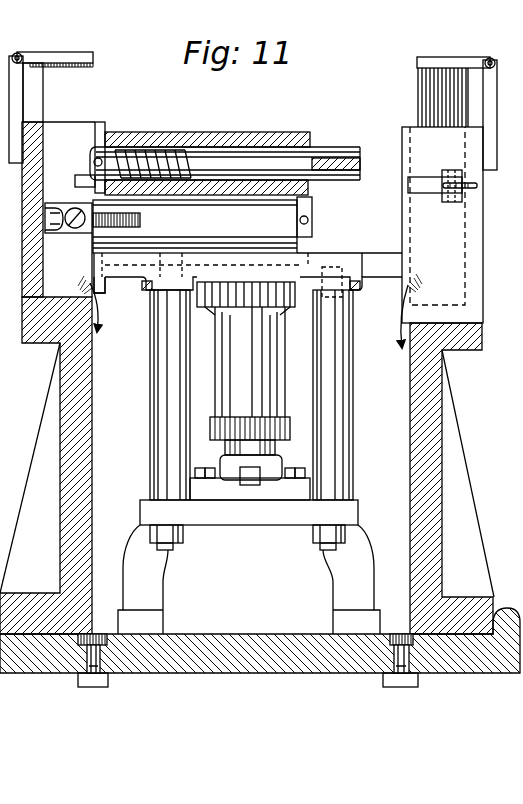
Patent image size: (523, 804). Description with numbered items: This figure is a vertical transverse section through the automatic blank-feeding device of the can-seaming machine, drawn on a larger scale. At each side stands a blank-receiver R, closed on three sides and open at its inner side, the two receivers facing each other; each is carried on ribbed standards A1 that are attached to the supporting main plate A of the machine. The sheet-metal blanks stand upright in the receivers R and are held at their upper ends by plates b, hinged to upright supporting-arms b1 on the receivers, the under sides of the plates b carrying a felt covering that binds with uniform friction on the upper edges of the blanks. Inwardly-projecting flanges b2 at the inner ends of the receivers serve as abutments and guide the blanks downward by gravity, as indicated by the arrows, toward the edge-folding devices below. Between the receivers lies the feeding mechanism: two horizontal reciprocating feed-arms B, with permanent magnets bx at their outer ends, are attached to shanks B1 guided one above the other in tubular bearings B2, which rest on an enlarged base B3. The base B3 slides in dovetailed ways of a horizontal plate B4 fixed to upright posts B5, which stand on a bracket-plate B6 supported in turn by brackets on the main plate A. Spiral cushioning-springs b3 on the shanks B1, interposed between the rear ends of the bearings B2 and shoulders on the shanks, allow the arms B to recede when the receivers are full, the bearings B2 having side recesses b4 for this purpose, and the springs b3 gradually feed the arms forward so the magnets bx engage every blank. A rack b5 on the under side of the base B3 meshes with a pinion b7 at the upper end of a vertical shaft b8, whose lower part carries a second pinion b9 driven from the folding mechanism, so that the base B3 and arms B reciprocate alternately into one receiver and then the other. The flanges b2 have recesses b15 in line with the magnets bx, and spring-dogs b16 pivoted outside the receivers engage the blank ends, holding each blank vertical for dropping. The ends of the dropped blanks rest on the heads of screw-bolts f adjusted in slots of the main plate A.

The main plate A is at (255, 631).
The ribbed standards A1 is at (48, 501).
The blank-receivers R is at (30, 206).
The plates b is at (253, 80).
The upright supporting-arms b1 is at (262, 113).
The inwardly-projecting flanges b2 is at (100, 132).
The spiral cushioning-springs b3 is at (174, 142).
The side recesses b4 is at (127, 219).
The permanent magnets bx is at (62, 233).
The rack b5 is at (147, 292).
The pinion b7 is at (270, 298).
The vertical shaft b8 is at (272, 450).
The second pinion b9 is at (260, 428).
The recesses b15 is at (413, 177).
The spring-dogs b16 is at (443, 193).
The horizontal reciprocating feed-arms B is at (333, 158).
The shanks B1 is at (225, 190).
The tubular bearings B2 is at (218, 123).
The enlarged base B3 is at (236, 271).
The horizontal plate B4 is at (136, 275).
The upright posts B5 is at (132, 410).
The bracket-plate B6 is at (258, 555).
The screw-bolts f is at (96, 634).